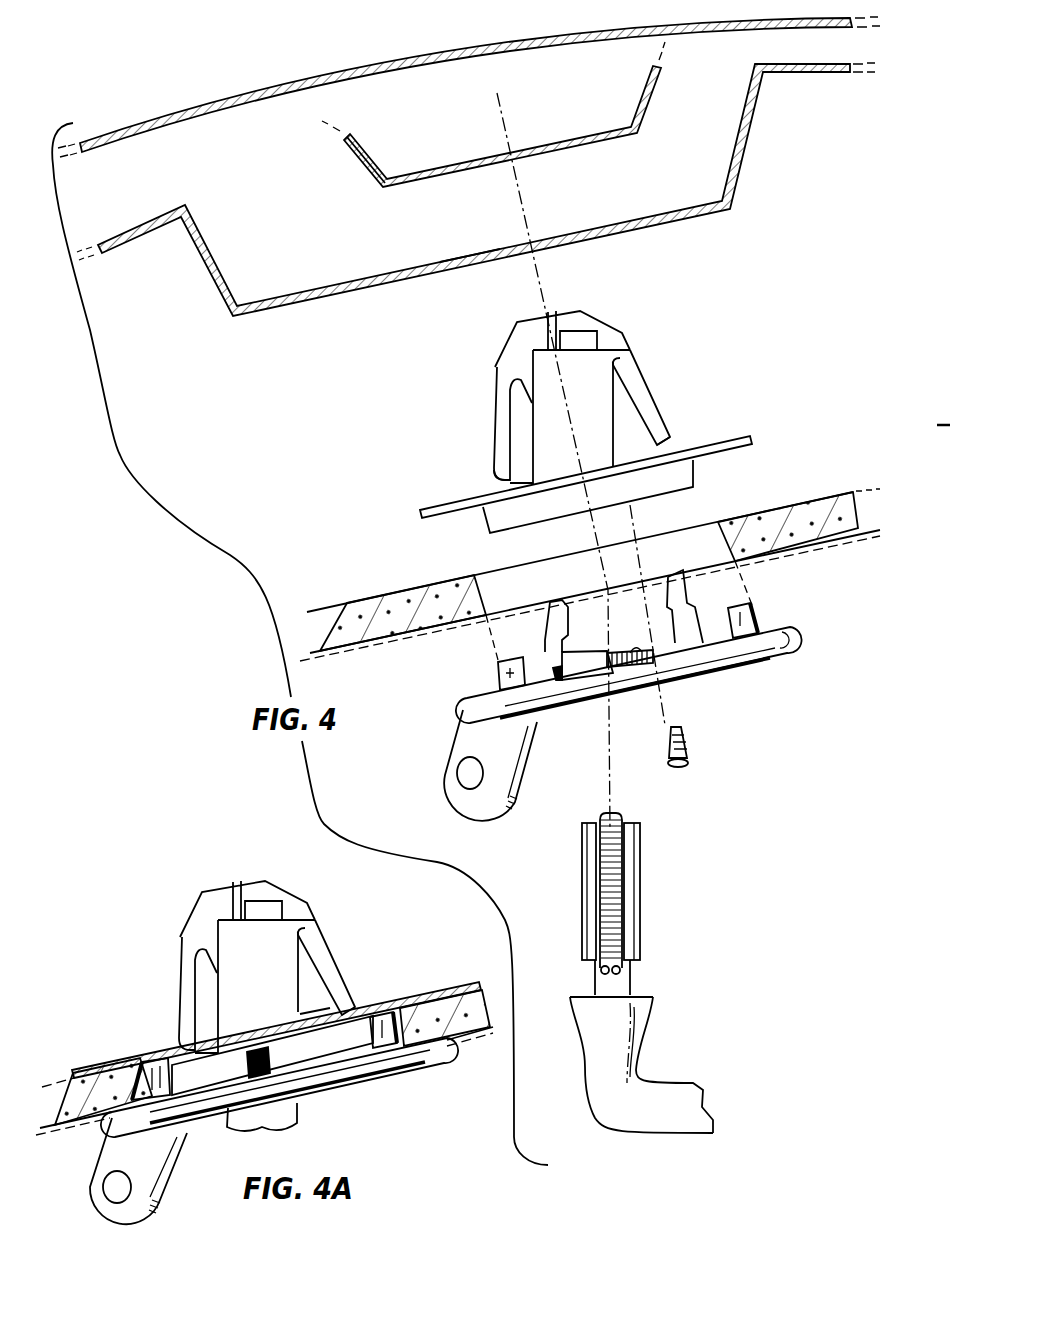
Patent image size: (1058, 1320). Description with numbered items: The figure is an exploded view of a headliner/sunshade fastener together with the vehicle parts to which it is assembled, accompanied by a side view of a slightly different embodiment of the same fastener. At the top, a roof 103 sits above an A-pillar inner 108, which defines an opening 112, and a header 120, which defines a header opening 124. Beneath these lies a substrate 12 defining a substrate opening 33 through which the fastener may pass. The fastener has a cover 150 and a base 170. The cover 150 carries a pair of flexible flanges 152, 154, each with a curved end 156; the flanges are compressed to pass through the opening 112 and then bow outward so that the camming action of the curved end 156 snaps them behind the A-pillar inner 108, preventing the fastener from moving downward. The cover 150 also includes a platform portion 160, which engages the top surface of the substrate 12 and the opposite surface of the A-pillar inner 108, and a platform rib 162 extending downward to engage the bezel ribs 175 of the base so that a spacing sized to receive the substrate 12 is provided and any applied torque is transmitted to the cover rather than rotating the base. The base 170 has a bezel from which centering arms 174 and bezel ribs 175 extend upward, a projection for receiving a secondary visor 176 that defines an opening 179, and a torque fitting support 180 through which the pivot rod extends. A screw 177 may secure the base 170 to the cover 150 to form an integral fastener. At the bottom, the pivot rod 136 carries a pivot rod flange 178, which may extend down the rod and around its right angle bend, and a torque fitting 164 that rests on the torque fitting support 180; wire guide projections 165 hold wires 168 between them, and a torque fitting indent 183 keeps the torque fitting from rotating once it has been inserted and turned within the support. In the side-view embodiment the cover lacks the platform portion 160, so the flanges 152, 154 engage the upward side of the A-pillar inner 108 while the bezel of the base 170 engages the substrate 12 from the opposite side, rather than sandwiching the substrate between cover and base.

In FIG. 4, the substrate 12 is at (398, 600).
In FIG. 4A, the substrate 12 is at (430, 993).
In FIG. 4, the substrate opening 33 is at (732, 540).
In FIG. 4, the roof 103 is at (313, 80).
In FIG. 4, the A-pillar inner 108 is at (384, 279).
In FIG. 4A, the A-pillar inner 108 is at (110, 1067).
In FIG. 4, the A-pillar opening 112 is at (470, 259).
In FIG. 4A, the A-pillar opening 112 is at (307, 1013).
In FIG. 4, the header 120 is at (355, 160).
In FIG. 4, the header opening 124 is at (452, 162).
In FIG. 4, the pivot rod 136 is at (657, 1093).
In FIG. 4A, the pivot rod 136 is at (287, 1120).
In FIG. 4, the cover 150 is at (581, 379).
In FIG. 4A, the cover 150 is at (248, 967).
In FIG. 4, the flange 152 is at (496, 432).
In FIG. 4A, the flange 152 is at (176, 993).
In FIG. 4, the flange 154 is at (647, 396).
In FIG. 4A, the flange 154 is at (341, 967).
In FIG. 4, the curved end 156 is at (666, 442).
In FIG. 4, the platform portion 160 is at (748, 434).
In FIG. 4, the platform rib 162 is at (697, 471).
In FIG. 4A, the platform rib 162 is at (347, 1059).
In FIG. 4, the torque fitting 164 is at (640, 915).
In FIG. 4, the wire guide projections 165 is at (596, 882).
In FIG. 4, the wires 168 is at (616, 812).
In FIG. 4A, the wires 168 is at (243, 1069).
In FIG. 4, the base 170 is at (783, 652).
In FIG. 4A, the base 170 is at (387, 1080).
In FIG. 4, the centering arms 174 is at (688, 604).
In FIG. 4, the bezel ribs 175 is at (760, 612).
In FIG. 4A, the bezel ribs 175 is at (378, 1013).
In FIG. 4, the projection for receiving secondary visor 176 is at (470, 728).
In FIG. 4A, the projection for receiving secondary visor 176 is at (113, 1147).
In FIG. 4, the screw 177 is at (688, 740).
In FIG. 4, the pivot rod flange 178 is at (655, 1006).
In FIG. 4, the opening 179 is at (463, 774).
In FIG. 4A, the opening 179 is at (117, 1188).
In FIG. 4, the torque fitting support 180 is at (598, 668).
In FIG. 4, the torque fitting indent 183 is at (657, 667).